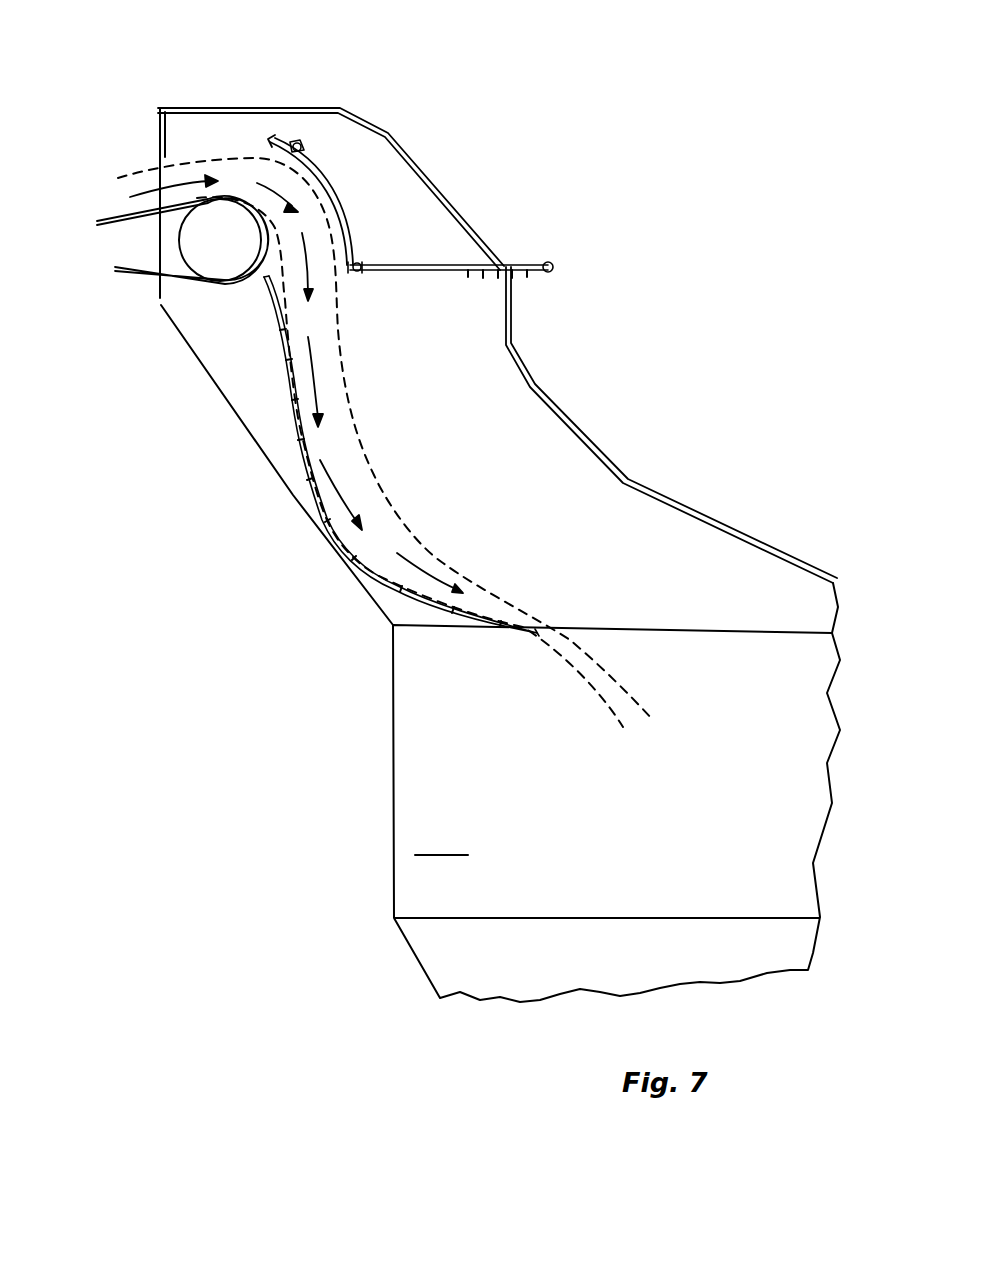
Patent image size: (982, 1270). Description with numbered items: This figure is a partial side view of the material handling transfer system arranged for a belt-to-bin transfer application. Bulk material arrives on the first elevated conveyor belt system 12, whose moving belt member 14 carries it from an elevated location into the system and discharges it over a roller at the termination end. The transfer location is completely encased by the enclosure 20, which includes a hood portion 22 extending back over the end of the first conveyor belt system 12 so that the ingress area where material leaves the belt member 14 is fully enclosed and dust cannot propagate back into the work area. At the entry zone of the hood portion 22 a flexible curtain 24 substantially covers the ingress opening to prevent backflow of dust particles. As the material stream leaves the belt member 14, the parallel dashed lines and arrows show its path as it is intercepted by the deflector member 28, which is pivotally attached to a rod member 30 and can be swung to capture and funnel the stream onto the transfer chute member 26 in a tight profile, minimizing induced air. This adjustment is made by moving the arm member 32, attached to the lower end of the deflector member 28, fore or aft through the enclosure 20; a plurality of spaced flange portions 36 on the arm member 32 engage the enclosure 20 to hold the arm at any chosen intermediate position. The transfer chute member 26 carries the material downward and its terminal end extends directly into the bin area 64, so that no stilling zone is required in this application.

The first elevated conveyor belt system 12 is at (215, 282).
The moving belt member 14 is at (128, 268).
The enclosure 20 is at (300, 491).
The hood portion 22 is at (237, 108).
The flexible curtain 24 is at (158, 135).
The transfer chute member 26 is at (295, 415).
The deflector member 28 is at (343, 211).
The rod member 30 is at (302, 143).
The arm member 32 is at (537, 265).
The spaced flange portions 36 is at (483, 278).
The bin area 64 is at (777, 720).